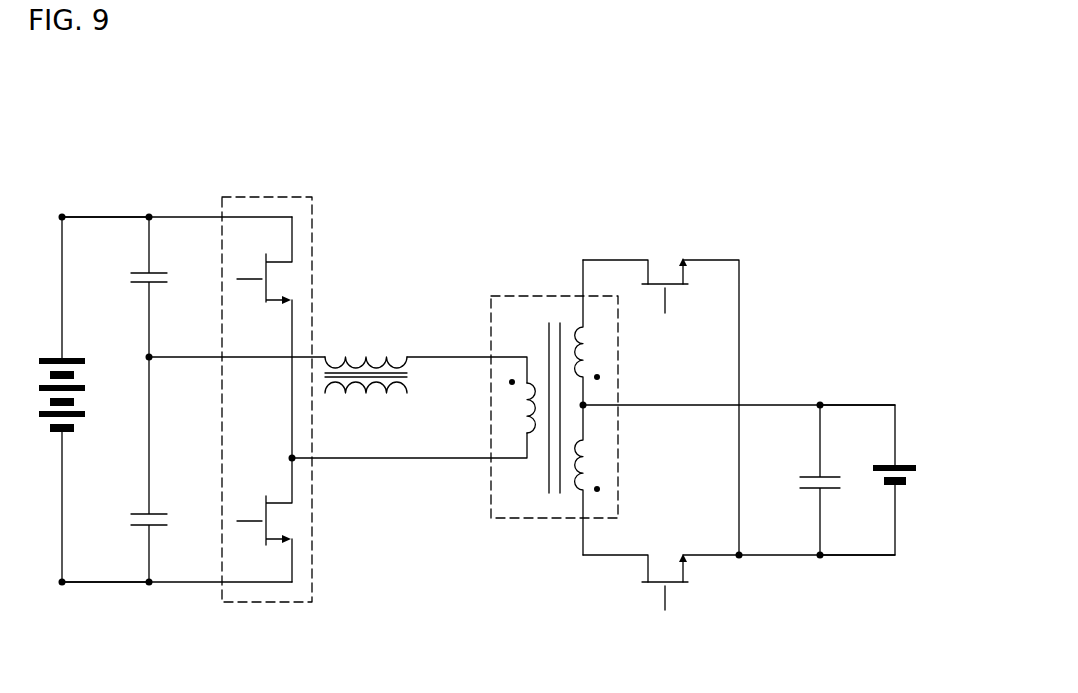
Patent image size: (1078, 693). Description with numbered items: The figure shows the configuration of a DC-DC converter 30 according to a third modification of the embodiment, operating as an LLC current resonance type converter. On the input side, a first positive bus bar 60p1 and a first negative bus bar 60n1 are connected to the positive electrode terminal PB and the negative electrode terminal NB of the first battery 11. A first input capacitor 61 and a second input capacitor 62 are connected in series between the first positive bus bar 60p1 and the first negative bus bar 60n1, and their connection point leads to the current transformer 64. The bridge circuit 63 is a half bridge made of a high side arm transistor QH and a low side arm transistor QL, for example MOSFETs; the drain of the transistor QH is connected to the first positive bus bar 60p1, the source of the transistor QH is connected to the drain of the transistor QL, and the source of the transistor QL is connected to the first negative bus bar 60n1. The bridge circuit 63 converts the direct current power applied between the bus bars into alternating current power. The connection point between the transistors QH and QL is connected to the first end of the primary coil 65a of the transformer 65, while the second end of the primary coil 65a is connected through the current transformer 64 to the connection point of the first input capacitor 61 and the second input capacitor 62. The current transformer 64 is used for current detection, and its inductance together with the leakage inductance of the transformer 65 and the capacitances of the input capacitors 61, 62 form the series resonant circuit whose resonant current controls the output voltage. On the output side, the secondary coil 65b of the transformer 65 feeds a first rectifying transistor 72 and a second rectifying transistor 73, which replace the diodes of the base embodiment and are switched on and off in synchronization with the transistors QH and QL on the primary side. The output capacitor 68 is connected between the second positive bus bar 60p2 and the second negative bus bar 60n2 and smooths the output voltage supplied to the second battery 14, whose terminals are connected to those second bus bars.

The DC-DC converter 30 is at (751, 139).
The first battery 11 is at (52, 360).
The second battery 14 is at (900, 465).
The first input capacitor 61 is at (157, 272).
The second input capacitor 62 is at (155, 527).
The bridge circuit 63 is at (281, 386).
The current transformer 64 is at (392, 353).
The transformer 65 is at (554, 400).
The primary coil 65a is at (529, 436).
The secondary coil 65b is at (579, 494).
The output capacitor 68 is at (813, 490).
The first rectifying transistor 72 is at (656, 282).
The second rectifying transistor 73 is at (655, 592).
The first positive bus bar 60p1 is at (99, 216).
The first negative bus bar 60n1 is at (112, 583).
The second positive bus bar 60p2 is at (851, 404).
The second negative bus bar 60n2 is at (857, 557).
The positive electrode terminal PB is at (62, 216).
The negative electrode terminal NB is at (62, 583).
The high side arm transistor QH is at (261, 279).
The low side arm transistor QL is at (258, 522).